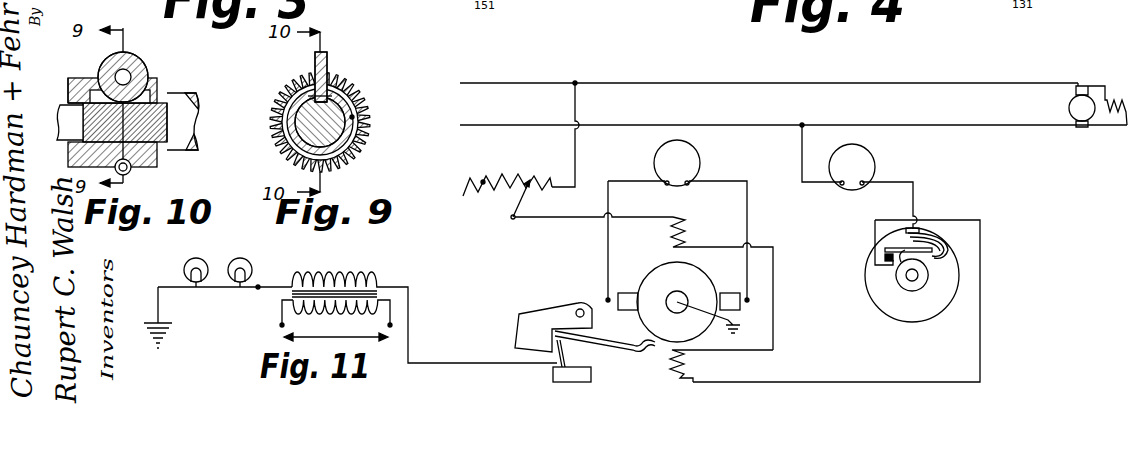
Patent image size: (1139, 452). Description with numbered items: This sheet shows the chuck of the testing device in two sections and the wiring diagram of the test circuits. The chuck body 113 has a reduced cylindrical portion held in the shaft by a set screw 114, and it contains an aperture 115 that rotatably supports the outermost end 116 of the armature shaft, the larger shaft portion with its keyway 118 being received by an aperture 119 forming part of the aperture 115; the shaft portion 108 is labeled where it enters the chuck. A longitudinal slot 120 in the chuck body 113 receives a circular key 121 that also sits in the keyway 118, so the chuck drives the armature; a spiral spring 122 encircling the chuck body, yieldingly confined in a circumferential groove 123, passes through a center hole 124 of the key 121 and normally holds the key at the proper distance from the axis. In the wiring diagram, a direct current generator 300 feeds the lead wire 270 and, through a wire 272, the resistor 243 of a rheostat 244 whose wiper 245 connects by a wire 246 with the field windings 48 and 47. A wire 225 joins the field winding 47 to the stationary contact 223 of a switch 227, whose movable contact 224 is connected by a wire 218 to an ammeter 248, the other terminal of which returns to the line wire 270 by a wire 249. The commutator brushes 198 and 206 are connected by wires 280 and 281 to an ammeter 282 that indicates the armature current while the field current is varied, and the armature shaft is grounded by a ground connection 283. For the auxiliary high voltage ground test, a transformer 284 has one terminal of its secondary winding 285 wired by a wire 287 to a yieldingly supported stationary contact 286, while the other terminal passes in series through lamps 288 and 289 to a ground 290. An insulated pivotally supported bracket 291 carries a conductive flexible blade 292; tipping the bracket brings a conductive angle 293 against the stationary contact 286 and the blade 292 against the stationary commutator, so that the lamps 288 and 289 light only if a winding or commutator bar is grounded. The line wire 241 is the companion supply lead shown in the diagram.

In FIG. 11, the field winding 47 is at (690, 364).
In FIG. 11, the field winding 48 is at (683, 233).
In FIG. 9, the gear hub 108 is at (290, 100).
In FIG. 10, the chuck body 113 is at (71, 83).
In FIG. 9, the chuck body 113 is at (363, 148).
In FIG. 10, the set screw 114 is at (158, 155).
In FIG. 9, the set screw 114 is at (272, 137).
In FIG. 10, the aperture 115 is at (70, 144).
In FIG. 10, the outermost end of the armature shaft 116 is at (72, 127).
In FIG. 10, the keyway 118 is at (168, 92).
In FIG. 10, the aperture 119 is at (73, 85).
In FIG. 10, the longitudinal slot 120 is at (157, 80).
In FIG. 10, the circular key 121 is at (135, 68).
In FIG. 9, the circular key 121 is at (328, 62).
In FIG. 10, the spiral spring 122 is at (113, 62).
In FIG. 9, the spiral spring 122 is at (345, 88).
In FIG. 10, the circumferential groove 123 is at (138, 172).
In FIG. 9, the circumferential groove 123 is at (372, 116).
In FIG. 9, the center hole 124 is at (330, 87).
In FIG. 11, the commutator brush 198 is at (629, 293).
In FIG. 11, the commutator brush 206 is at (727, 293).
In FIG. 11, the wire 218 is at (915, 194).
In FIG. 11, the stationary contact 223 is at (888, 260).
In FIG. 11, the movable contact 224 is at (888, 249).
In FIG. 11, the wire 225 is at (981, 305).
In FIG. 11, the switch 227 is at (890, 299).
In FIG. 11, the supply line 241 is at (495, 83).
In FIG. 11, the rheostat resistance 243 is at (483, 180).
In FIG. 11, the rheostat 244 is at (497, 215).
In FIG. 11, the rheostat arm 245 is at (523, 202).
In FIG. 11, the conductor 246 is at (516, 220).
In FIG. 11, the ammeter 248 is at (870, 161).
In FIG. 11, the conductor 249 is at (802, 158).
In FIG. 11, the lead wire 270 is at (495, 125).
In FIG. 11, the wire 272 is at (578, 146).
In FIG. 11, the wire 280 is at (608, 257).
In FIG. 11, the wire 281 is at (748, 226).
In FIG. 11, the ammeter 282 is at (698, 152).
In FIG. 11, the ground connection 283 is at (733, 320).
In FIG. 11, the transformer 284 is at (420, 261).
In FIG. 11, the secondary winding 285 is at (378, 286).
In FIG. 11, the stationary contact 286 is at (565, 355).
In FIG. 11, the wire 287 is at (450, 363).
In FIG. 11, the lamp 288 is at (240, 258).
In FIG. 11, the lamp 289 is at (196, 258).
In FIG. 11, the ground 290 is at (172, 323).
In FIG. 11, the bracket 291 is at (547, 312).
In FIG. 11, the conductive flexible blade 292 is at (630, 347).
In FIG. 11, the conductive angle 293 is at (553, 338).
In FIG. 11, the D. C. generator 300 is at (1077, 107).